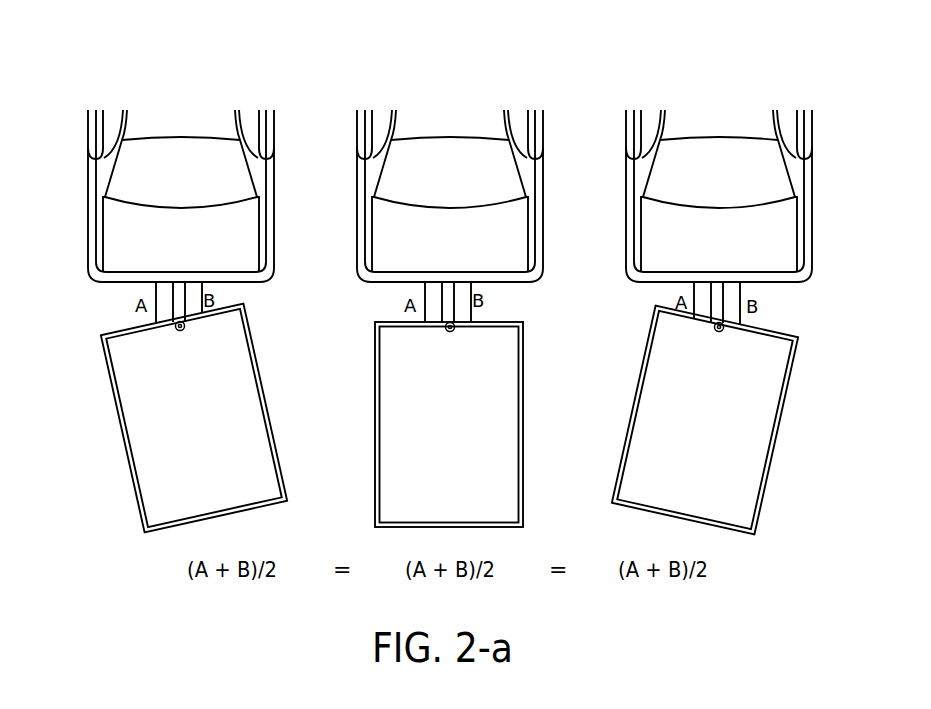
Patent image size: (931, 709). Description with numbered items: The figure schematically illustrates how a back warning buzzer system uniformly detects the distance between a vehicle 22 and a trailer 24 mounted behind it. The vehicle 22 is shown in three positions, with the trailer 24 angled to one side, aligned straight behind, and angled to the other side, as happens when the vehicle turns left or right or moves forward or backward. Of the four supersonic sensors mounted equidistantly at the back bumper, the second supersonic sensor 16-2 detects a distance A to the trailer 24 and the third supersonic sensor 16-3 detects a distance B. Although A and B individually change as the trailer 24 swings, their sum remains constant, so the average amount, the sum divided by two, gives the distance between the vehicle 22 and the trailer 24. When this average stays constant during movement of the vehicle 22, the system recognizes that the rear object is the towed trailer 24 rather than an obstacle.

The vehicle 22 is at (93, 278).
The second supersonic sensor 16-2 is at (152, 285).
The third supersonic sensor 16-3 is at (204, 285).
The trailer 24 is at (213, 433).